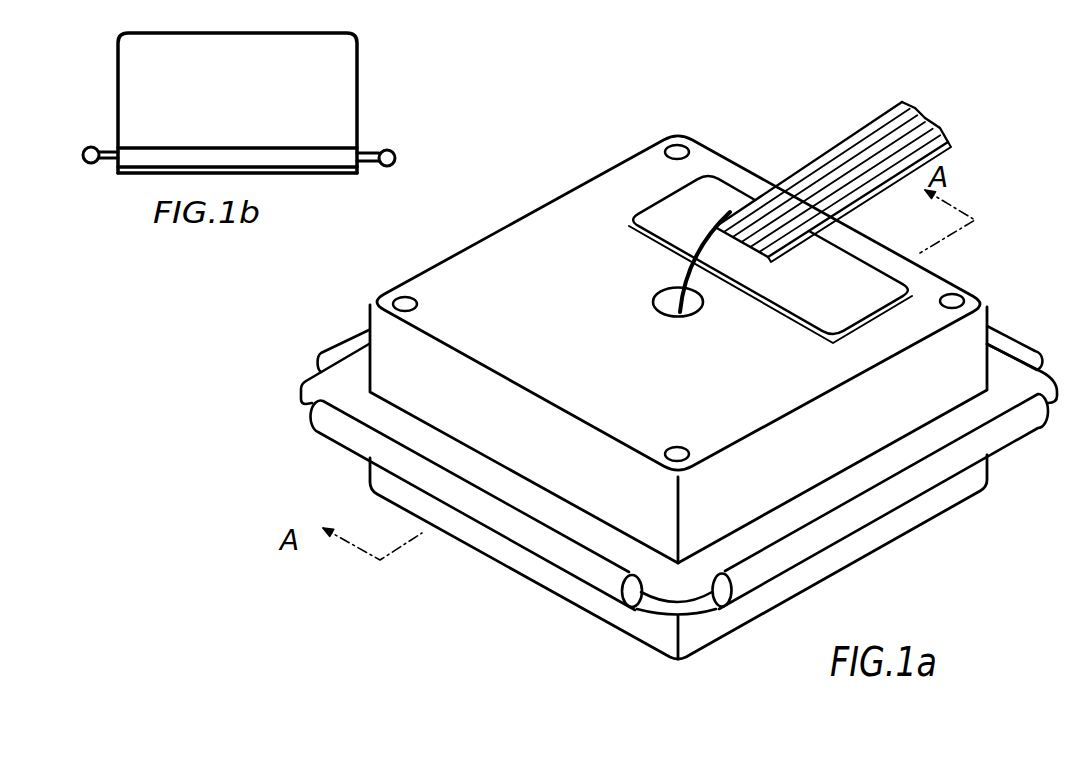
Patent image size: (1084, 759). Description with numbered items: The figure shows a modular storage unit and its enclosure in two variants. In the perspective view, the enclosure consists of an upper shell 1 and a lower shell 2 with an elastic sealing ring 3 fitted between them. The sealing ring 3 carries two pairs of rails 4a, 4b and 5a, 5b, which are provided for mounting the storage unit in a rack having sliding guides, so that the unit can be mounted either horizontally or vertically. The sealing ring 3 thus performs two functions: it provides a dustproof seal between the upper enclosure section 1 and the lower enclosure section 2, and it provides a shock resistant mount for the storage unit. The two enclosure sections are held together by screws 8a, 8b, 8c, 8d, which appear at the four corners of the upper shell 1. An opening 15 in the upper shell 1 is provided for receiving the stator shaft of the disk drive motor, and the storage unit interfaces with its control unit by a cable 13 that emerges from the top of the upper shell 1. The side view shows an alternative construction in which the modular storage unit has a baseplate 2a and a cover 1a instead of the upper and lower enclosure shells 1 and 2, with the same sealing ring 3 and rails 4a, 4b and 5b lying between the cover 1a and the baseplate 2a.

In FIG. 1a, the upper shell 1 is at (497, 245).
In FIG. 1b, the cover 1a is at (340, 80).
In FIG. 1a, the lower shell 2 is at (520, 555).
In FIG. 1b, the baseplate 2a is at (288, 167).
In FIG. 1b, the elastic sealing ring 3 is at (367, 152).
In FIG. 1a, the rail 4a is at (345, 432).
In FIG. 1b, the rail 4a is at (82, 155).
In FIG. 1a, the rail 4b is at (1010, 345).
In FIG. 1b, the rail 4b is at (397, 153).
In FIG. 1a, the rail 5a is at (1010, 432).
In FIG. 1b, the rail 5b is at (328, 157).
In FIG. 1a, the screw 8a is at (418, 303).
In FIG. 1a, the screw 8b is at (667, 156).
In FIG. 1a, the screw 8c is at (958, 298).
In FIG. 1a, the screw 8d is at (678, 447).
In FIG. 1a, the cable 13 is at (853, 137).
In FIG. 1a, the opening 15 is at (666, 306).